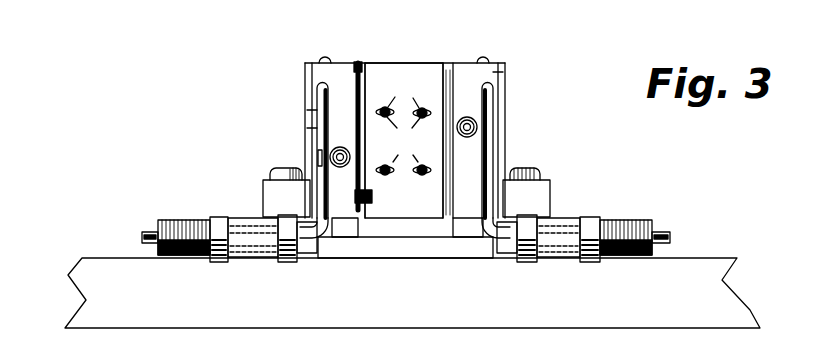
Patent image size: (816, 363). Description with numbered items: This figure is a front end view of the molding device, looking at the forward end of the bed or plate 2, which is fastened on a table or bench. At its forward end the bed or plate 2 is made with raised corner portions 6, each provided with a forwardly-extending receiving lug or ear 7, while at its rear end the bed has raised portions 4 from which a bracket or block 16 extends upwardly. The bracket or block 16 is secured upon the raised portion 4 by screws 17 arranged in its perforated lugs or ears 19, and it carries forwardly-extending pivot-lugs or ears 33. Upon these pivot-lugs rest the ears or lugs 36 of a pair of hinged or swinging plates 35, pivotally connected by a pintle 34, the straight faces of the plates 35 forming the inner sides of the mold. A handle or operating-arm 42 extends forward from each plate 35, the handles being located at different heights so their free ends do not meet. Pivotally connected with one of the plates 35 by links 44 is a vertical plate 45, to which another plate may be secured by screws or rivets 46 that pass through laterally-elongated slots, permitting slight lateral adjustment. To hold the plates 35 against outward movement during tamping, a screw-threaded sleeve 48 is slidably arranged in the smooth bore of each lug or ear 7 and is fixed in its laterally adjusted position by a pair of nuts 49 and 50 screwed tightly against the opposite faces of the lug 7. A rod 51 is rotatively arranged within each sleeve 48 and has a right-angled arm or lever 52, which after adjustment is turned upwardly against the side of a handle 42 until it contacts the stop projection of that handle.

The bed or plate 2 is at (421, 250).
The raised portions 4 is at (680, 316).
The raised corner portions 6 is at (347, 232).
The receiving lug or ear 7 is at (254, 258).
The bracket or block 16 is at (312, 150).
The screws 17 is at (270, 172).
The perforated lugs or ears 19 is at (265, 195).
The pivot-lugs or ears 33 is at (318, 93).
The pintle 34 is at (335, 45).
The hinged or swinging plates 35 is at (338, 78).
The ears or lugs 36 is at (306, 68).
The handle or operating-arm 42 is at (320, 140).
The links 44 is at (362, 62).
The vertical plate 45 is at (420, 70).
The screws or rivets 46 is at (432, 188).
The sleeve 48 is at (632, 202).
The nut 49 is at (219, 265).
The nut 50 is at (287, 265).
The rod 51 is at (148, 232).
The right-angled arm or lever 52 is at (318, 116).